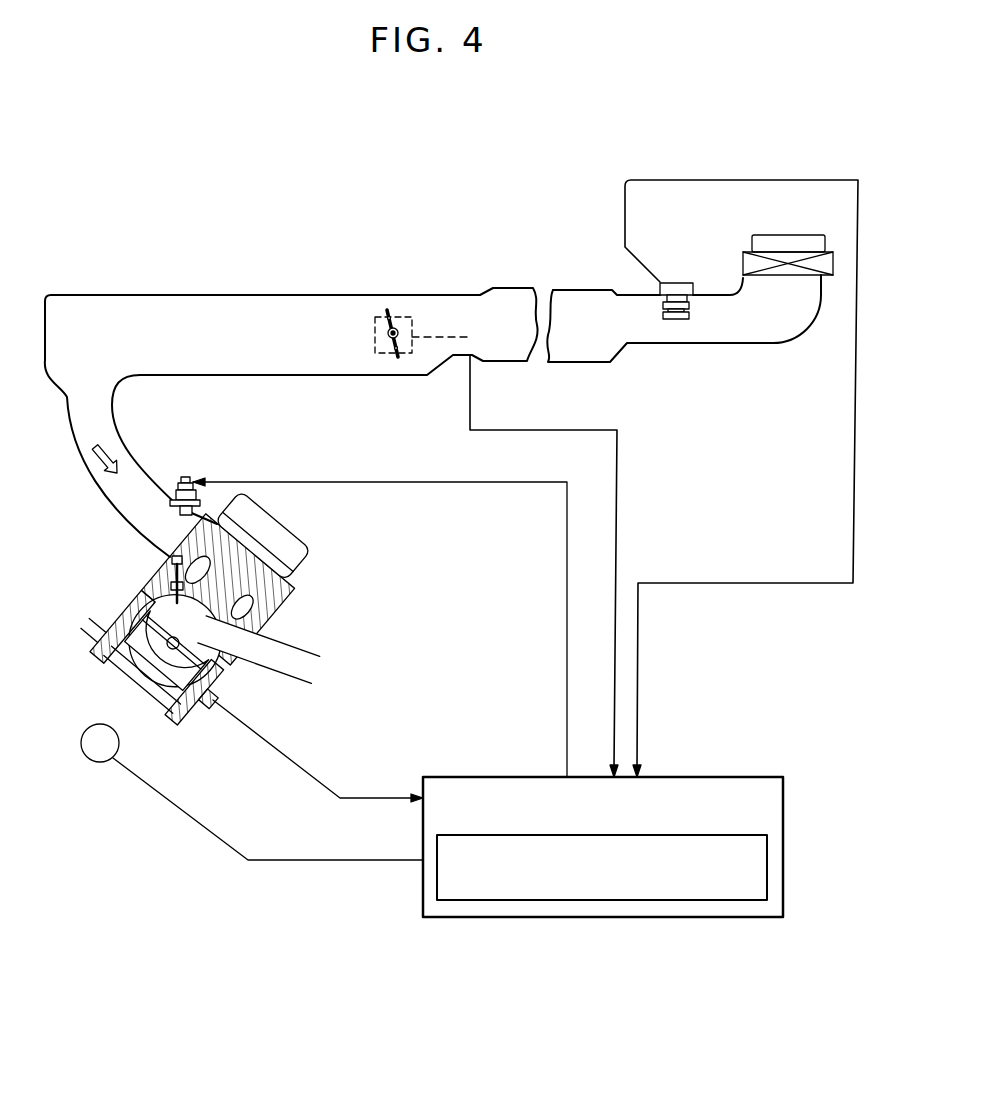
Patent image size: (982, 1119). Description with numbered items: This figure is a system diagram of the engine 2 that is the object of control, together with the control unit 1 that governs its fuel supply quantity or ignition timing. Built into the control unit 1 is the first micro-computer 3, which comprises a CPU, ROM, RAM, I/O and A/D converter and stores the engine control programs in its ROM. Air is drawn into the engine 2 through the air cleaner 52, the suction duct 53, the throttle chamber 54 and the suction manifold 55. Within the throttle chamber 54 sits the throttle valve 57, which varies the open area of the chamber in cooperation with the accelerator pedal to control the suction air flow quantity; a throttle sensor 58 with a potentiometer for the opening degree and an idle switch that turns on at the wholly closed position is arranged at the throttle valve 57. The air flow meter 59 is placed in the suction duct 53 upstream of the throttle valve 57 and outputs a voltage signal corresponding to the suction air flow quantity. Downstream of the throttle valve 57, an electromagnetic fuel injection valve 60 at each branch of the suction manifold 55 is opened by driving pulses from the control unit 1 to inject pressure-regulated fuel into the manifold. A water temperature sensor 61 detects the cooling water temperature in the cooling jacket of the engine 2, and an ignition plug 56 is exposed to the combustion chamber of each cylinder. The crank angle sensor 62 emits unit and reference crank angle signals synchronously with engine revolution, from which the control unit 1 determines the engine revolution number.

The control unit 1 is at (733, 777).
The engine 2 is at (288, 608).
The first micro-computer 3 is at (735, 900).
The air cleaner 52 is at (743, 260).
The suction duct 53 is at (763, 345).
The throttle chamber 54 is at (427, 376).
The suction manifold 55 is at (83, 467).
The ignition plug 56 is at (165, 568).
The throttle valve 57 is at (390, 376).
The throttle sensor 58 is at (375, 340).
The air flow meter 59 is at (677, 320).
The electromagnetic fuel injection valve 60 is at (183, 475).
The water temperature sensor 61 is at (213, 702).
The crank angle sensor 62 is at (102, 762).